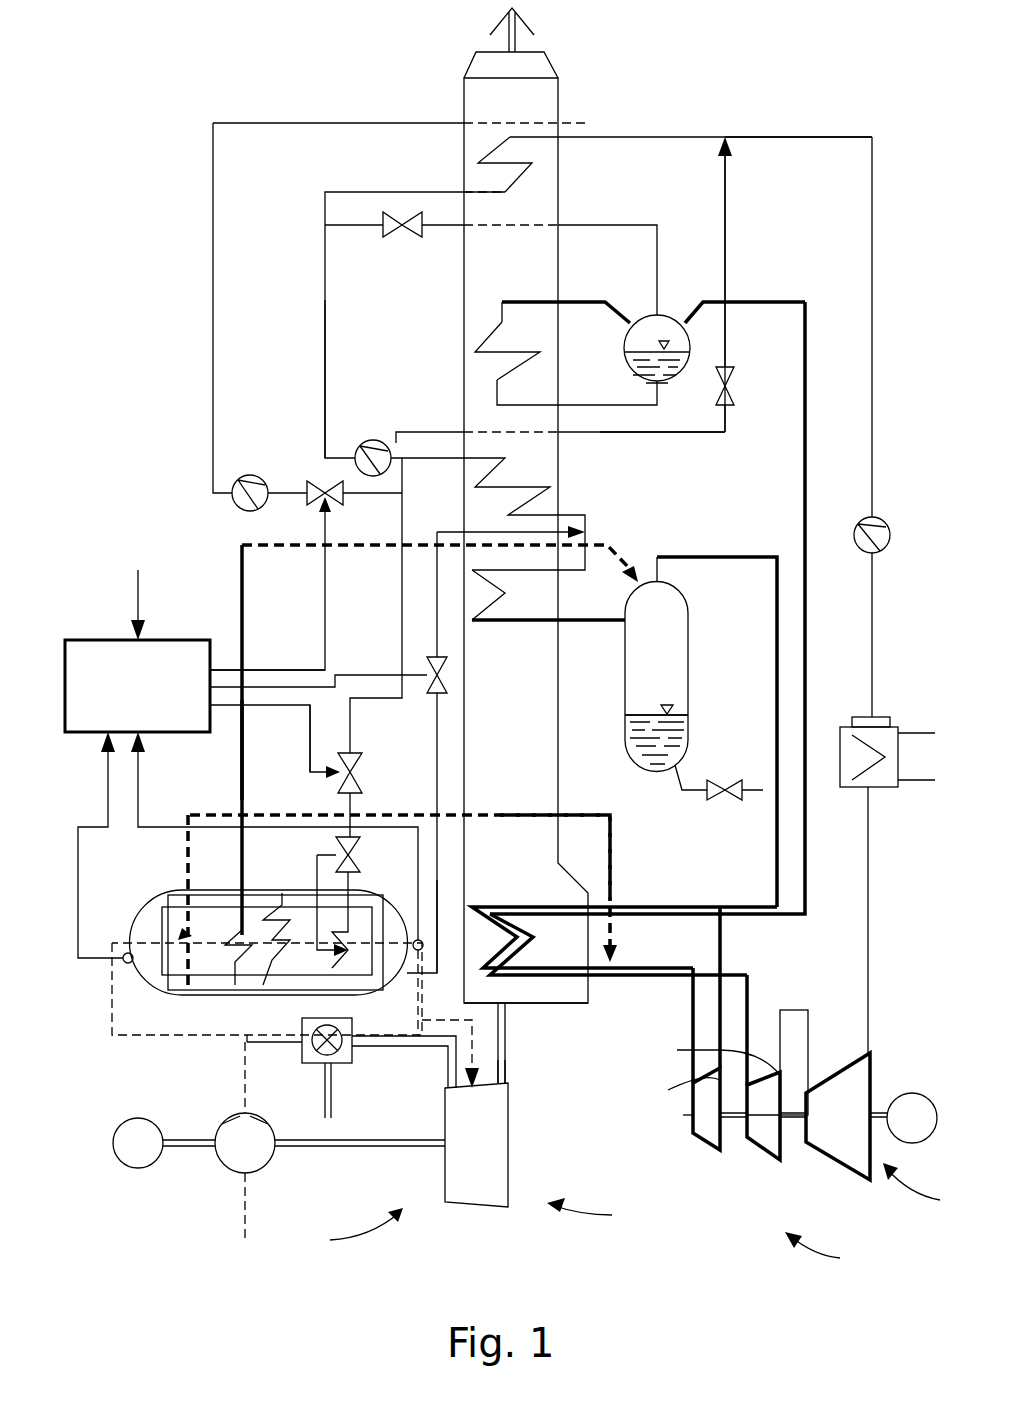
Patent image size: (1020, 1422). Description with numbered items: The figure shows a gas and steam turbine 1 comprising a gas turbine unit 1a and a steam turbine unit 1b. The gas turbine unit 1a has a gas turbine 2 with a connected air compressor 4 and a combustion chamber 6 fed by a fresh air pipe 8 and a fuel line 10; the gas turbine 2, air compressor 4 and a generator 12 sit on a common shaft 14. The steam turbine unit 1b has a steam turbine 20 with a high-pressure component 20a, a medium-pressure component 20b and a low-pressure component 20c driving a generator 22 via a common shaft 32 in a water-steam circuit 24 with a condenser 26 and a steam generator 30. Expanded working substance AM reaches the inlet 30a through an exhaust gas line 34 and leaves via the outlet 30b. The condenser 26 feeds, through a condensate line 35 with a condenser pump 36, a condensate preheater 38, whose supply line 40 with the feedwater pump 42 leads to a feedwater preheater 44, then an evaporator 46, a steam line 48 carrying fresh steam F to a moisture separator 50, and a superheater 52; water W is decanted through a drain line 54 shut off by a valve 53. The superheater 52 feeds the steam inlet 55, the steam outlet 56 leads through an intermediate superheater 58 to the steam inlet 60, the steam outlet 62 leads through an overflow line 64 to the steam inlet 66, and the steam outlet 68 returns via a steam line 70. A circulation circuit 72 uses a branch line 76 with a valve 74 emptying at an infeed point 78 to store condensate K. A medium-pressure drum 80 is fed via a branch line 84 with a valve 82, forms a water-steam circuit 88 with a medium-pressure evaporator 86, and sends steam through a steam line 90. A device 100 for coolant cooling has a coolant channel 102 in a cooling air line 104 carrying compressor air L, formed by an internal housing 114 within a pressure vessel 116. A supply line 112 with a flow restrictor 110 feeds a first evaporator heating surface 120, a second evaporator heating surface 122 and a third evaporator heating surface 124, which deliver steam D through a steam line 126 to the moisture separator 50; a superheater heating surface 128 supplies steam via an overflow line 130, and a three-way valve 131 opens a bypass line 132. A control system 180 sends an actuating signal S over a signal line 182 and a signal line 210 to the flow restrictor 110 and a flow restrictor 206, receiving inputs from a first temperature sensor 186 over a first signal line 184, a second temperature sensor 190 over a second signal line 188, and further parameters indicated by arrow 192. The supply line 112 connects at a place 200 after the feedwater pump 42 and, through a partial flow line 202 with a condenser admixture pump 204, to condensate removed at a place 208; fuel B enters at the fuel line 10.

The gas and steam turbine 1 is at (628, 1226).
The gas turbine unit 1a is at (322, 1251).
The steam turbine unit 1b is at (872, 1268).
The gas turbine 2 is at (510, 1168).
The air compressor 4 is at (228, 1172).
The combustion chamber 6 is at (320, 1066).
The fresh air pipe 8 is at (282, 1042).
The fuel line 10 is at (332, 1072).
The generator 12 is at (138, 1118).
The common shaft 14 is at (375, 1146).
The steam turbine 20 is at (968, 1212).
The high-pressure component 20a is at (693, 1140).
The medium-pressure component 20b is at (770, 1160).
The low-pressure component 20c is at (835, 1160).
The generator 22 is at (912, 1093).
The water-steam circuit 24 is at (690, 1030).
The condenser 26 is at (840, 755).
The steam generator 30 is at (560, 90).
The inlet 30a is at (585, 1003).
The outlet 30b is at (540, 52).
The common shaft 32 is at (790, 1120).
The exhaust gas line 34 is at (508, 1035).
The condensate line 35 is at (872, 400).
The condenser pump 36 is at (888, 525).
The condensate preheater 38 is at (540, 168).
The supply line 40 is at (325, 385).
The feedwater pump 42 is at (380, 443).
The feedwater preheater 44 is at (535, 472).
The evaporator 46 is at (503, 594).
The steam line 48 is at (615, 620).
The moisture separator 50 is at (690, 620).
The superheater 52 is at (485, 907).
The valve 53 is at (705, 800).
The drain line 54 is at (760, 800).
The steam inlet 55 is at (685, 1115).
The steam outlet 56 is at (675, 1090).
The intermediate superheater 58 is at (530, 938).
The steam inlet 60 is at (745, 1120).
The steam outlet 62 is at (712, 1057).
The overflow line 64 is at (795, 1010).
The steam inlet 66 is at (808, 1093).
The steam outlet 68 is at (870, 1060).
The steam line 70 is at (868, 920).
The circulation circuit 72 is at (325, 300).
The valve 74 is at (733, 390).
The branch line 76 is at (630, 432).
The infeed point 78 is at (728, 137).
The medium-pressure drum 80 is at (678, 316).
The valve 82 is at (402, 230).
The branch line 84 is at (622, 225).
The medium-pressure evaporator 86 is at (545, 350).
The water-steam circuit 88 is at (570, 302).
The steam line 90 is at (805, 378).
The device for coolant cooling 100 is at (130, 905).
The coolant channel 102 is at (158, 972).
The cooling air line 104 is at (418, 1018).
The flow restrictor 110 is at (362, 770).
The supply line 112 is at (360, 698).
The internal housing 114 is at (225, 985).
The pressure vessel 116 is at (170, 988).
The first evaporator heating surface 120 is at (320, 890).
The second evaporator heating surface 122 is at (270, 905).
The third evaporator heating surface 124 is at (232, 910).
The steam line 126 is at (242, 745).
The superheater heating surface 128 is at (172, 890).
The overflow line 130 is at (580, 815).
The three-way valve 131 is at (362, 836).
The bypass line 132 is at (310, 975).
The control system 180 is at (108, 640).
The signal line 182 is at (287, 726).
The first signal line 184 is at (108, 780).
The first temperature sensor 186 is at (126, 952).
The second signal line 188 is at (138, 818).
The second temperature sensor 190 is at (410, 920).
The arrow 192 is at (138, 612).
The place 200 is at (402, 470).
The partial flow line 202 is at (213, 230).
The condenser admixture pump 204 is at (250, 475).
The flow restrictor 206 is at (323, 480).
The place 208 is at (595, 137).
The signal line 210 is at (290, 670).
The steam D is at (242, 545).
The fresh steam F is at (760, 302).
The actuating signal S is at (325, 640).
The condensate K is at (872, 615).
The water W is at (690, 755).
The compressor air L is at (245, 1070).
The fuel B is at (335, 1108).
The working substance AM is at (508, 1080).